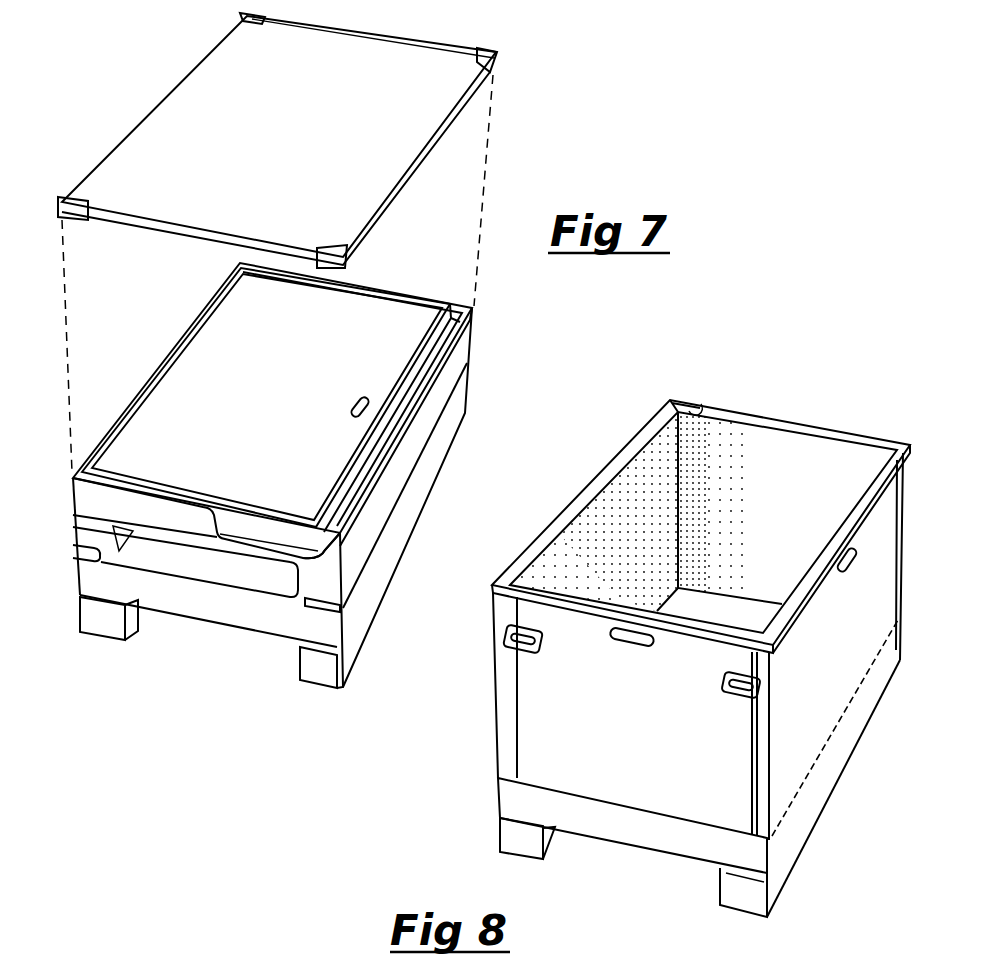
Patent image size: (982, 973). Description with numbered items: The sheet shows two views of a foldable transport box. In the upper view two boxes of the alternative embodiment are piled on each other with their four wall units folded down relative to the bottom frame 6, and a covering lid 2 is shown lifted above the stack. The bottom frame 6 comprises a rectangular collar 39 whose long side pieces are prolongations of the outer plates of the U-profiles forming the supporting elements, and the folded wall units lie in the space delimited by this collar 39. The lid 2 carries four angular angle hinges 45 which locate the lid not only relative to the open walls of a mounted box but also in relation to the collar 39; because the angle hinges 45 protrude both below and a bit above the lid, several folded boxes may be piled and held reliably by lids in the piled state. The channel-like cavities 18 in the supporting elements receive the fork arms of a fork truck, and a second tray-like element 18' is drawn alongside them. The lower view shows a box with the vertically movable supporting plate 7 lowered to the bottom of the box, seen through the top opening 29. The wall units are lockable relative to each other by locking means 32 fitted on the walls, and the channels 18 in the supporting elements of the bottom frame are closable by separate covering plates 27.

In FIG. 7, the lid 2 is at (457, 110).
In FIG. 7, the angle hinges 45 is at (84, 220).
In FIG. 7, the bottom frame 6 is at (188, 540).
In FIG. 7, the channel-like cavities 18 is at (266, 397).
In FIG. 7, the second tray 18' is at (392, 385).
In FIG. 7, the rectangular collar 39 is at (330, 557).
In FIG. 8, the supporting plate 7 is at (728, 607).
In FIG. 8, the top opening 29 is at (698, 403).
In FIG. 8, the locking means 32 is at (728, 698).
In FIG. 8, the covering plates 27 is at (520, 803).